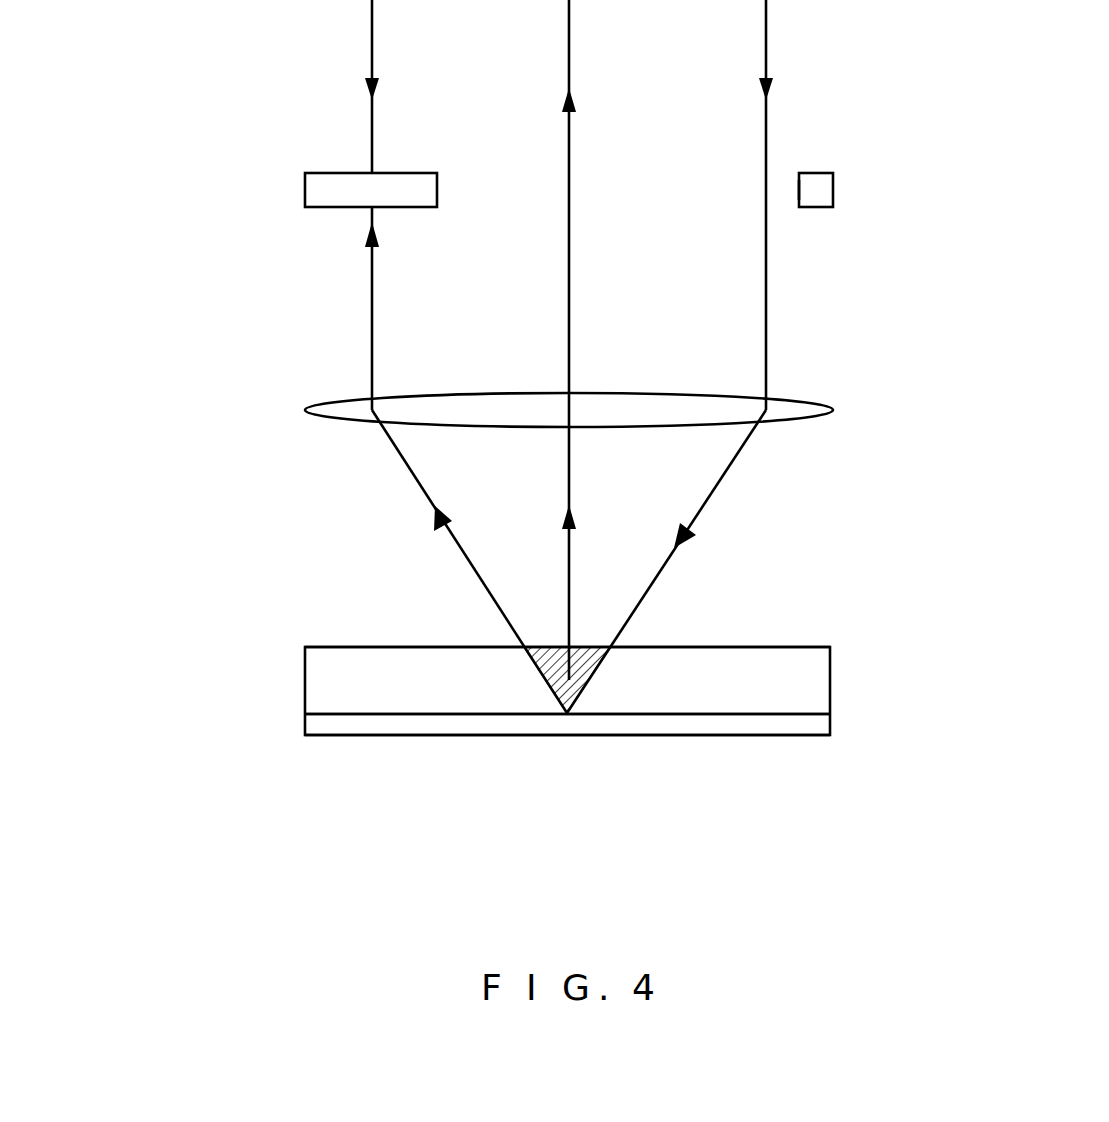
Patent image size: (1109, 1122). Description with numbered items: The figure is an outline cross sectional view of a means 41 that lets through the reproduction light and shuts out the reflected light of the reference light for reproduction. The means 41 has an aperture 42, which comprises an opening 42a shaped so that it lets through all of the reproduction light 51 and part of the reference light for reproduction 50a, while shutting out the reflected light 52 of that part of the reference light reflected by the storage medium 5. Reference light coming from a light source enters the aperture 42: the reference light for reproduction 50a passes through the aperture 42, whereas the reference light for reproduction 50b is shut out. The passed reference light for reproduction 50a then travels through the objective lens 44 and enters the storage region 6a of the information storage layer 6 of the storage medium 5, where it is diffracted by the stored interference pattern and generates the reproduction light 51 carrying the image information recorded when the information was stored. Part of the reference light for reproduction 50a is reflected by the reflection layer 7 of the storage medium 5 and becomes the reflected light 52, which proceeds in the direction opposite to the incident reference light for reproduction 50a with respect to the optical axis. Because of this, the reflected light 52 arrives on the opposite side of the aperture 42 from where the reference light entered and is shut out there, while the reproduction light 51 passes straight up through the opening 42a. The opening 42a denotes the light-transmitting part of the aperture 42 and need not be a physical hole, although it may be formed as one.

The means 41 is at (196, 140).
The aperture 42 is at (833, 192).
The opening 42a is at (799, 185).
The objective lens 44 is at (833, 402).
The storage medium 5 is at (625, 699).
The information storage layer 6 is at (830, 678).
The storage region 6a is at (567, 713).
The reflection layer 7 is at (830, 724).
The reference light for reproduction 50a is at (766, 45).
The reference light for reproduction 50b is at (372, 45).
The reproduction light 51 is at (569, 37).
The reflected light 52 is at (415, 480).